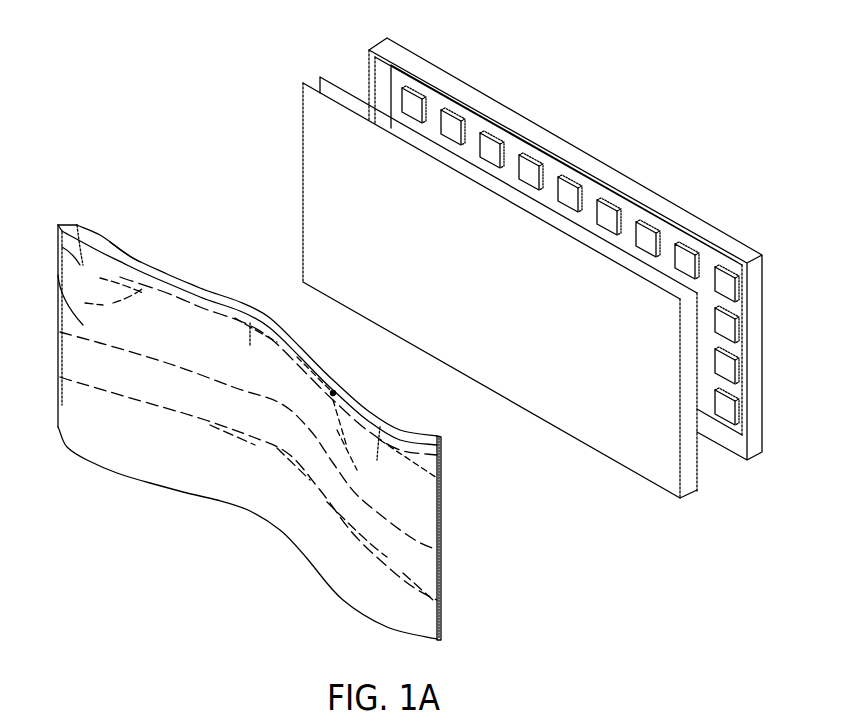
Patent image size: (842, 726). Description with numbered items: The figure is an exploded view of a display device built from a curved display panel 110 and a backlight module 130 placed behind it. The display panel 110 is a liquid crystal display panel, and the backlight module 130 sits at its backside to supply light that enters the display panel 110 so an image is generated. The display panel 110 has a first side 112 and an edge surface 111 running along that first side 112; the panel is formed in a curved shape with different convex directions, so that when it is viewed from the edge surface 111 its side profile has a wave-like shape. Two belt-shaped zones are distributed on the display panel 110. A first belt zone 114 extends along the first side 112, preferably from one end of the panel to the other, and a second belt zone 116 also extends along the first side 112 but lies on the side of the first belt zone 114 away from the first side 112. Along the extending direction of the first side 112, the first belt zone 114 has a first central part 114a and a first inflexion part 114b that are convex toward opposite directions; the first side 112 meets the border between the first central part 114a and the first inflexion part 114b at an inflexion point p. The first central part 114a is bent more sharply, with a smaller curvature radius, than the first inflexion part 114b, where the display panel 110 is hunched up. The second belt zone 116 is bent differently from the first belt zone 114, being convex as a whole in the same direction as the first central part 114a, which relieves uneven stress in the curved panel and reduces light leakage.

The display panel 110 is at (227, 380).
The edge surface 111 is at (95, 253).
The first side 112 is at (125, 273).
The first belt zone 114 is at (217, 303).
The first central part 114a is at (250, 347).
The first inflexion part 114b is at (75, 267).
The second belt zone 116 is at (242, 430).
The backlight module 130 is at (387, 37).
The inflexion point p is at (341, 374).